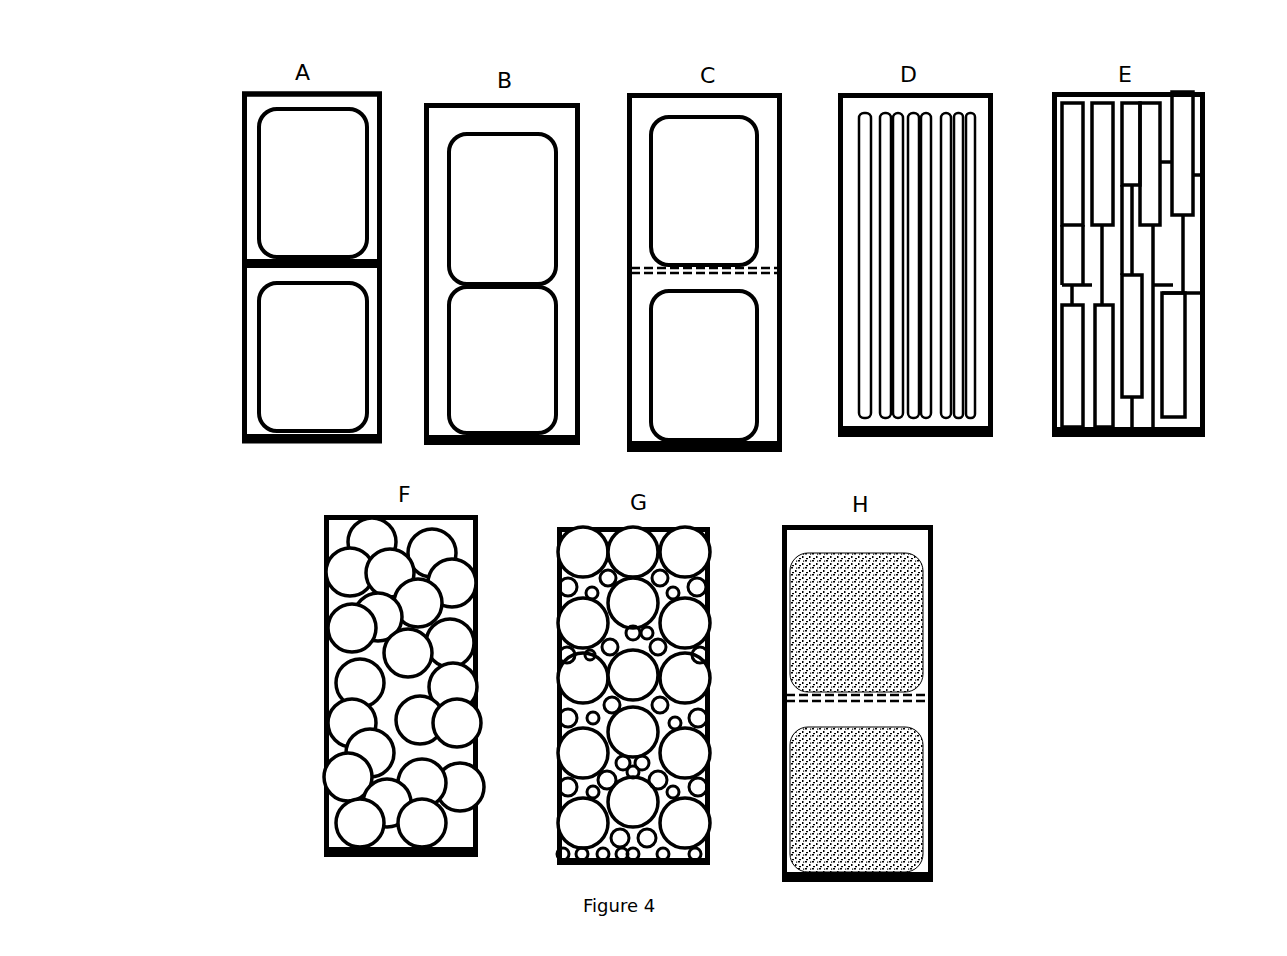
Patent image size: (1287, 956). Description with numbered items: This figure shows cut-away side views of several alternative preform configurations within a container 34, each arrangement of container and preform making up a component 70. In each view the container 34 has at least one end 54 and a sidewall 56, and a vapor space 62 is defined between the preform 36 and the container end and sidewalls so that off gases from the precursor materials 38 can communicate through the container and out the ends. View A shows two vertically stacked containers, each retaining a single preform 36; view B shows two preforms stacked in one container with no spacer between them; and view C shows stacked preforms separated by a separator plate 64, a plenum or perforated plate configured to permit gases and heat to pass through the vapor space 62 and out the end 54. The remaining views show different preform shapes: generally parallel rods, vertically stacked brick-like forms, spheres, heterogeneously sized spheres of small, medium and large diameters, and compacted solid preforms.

The container 34 is at (243, 150).
The preform 36 is at (318, 166).
The precursor materials 38 is at (325, 130).
The at least one end 54 is at (240, 266).
The sidewall 56 is at (243, 198).
The vapor space 62 is at (260, 110).
The separator plate 64 is at (782, 270).
The component 70 is at (238, 458).